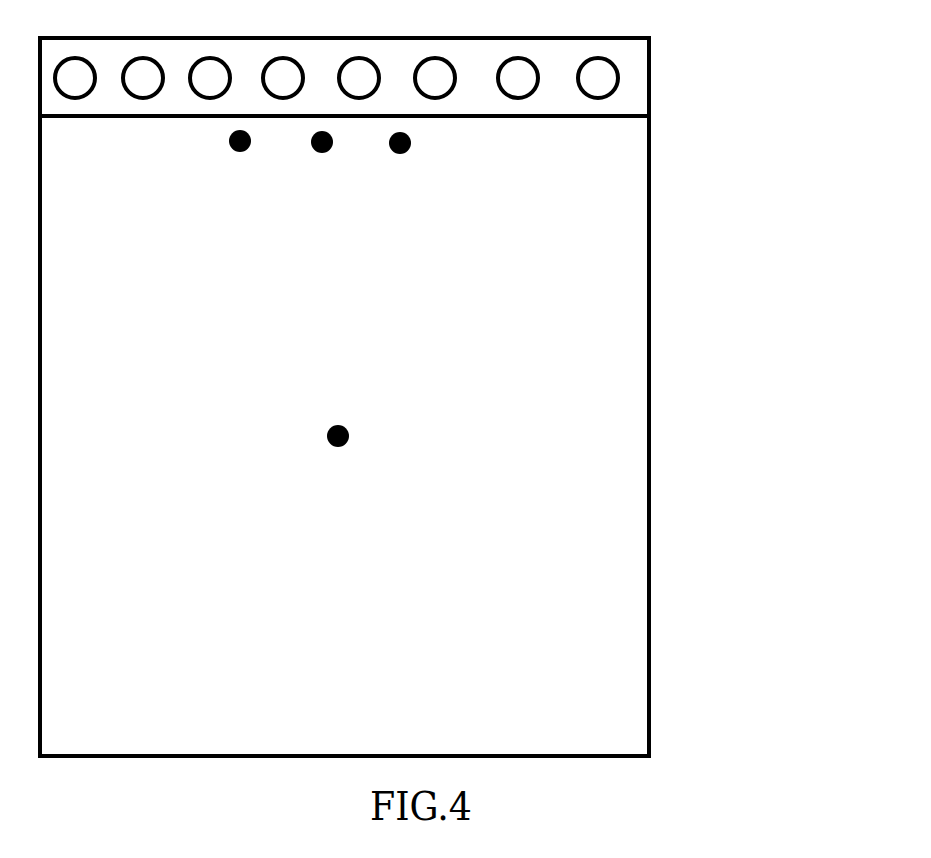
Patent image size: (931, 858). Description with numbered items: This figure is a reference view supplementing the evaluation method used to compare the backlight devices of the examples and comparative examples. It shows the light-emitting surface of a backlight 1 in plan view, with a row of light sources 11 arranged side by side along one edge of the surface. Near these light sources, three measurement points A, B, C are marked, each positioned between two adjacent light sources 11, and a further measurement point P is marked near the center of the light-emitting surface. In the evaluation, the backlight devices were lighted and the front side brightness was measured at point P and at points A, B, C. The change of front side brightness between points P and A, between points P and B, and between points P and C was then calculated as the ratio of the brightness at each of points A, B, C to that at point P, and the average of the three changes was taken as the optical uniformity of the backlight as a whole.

The stage / substrate holder 1 is at (603, 343).
The light source 11 is at (617, 63).
The point A is at (233, 151).
The point B is at (311, 151).
The point C is at (388, 152).
The point P is at (328, 443).